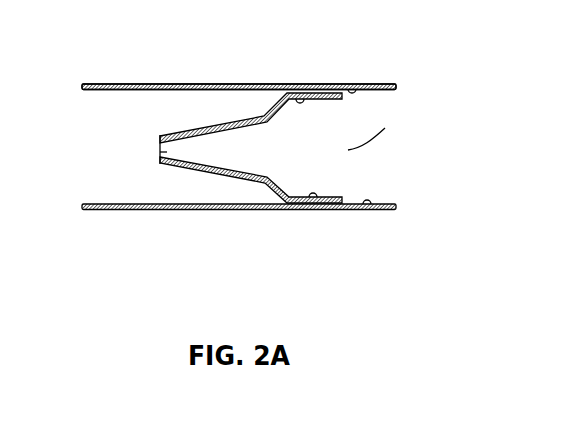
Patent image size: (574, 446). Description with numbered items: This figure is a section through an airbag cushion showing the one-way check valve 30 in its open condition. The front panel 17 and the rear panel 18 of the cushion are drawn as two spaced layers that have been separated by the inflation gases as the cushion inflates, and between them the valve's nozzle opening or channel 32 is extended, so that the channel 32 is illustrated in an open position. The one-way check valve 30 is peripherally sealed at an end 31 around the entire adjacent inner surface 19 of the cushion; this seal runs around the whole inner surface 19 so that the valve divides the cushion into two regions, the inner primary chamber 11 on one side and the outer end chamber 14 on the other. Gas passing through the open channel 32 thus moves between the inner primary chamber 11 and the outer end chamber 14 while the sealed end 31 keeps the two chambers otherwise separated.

The inner primary chamber 11 is at (385, 128).
The outer end chamber 14 is at (153, 108).
The front panel 17 is at (84, 84).
The rear panel 18 is at (157, 212).
The inner surface 19 is at (352, 89).
The one-way check valve 30 is at (245, 116).
The end 31 is at (300, 99).
The nozzle opening or channel 32 is at (160, 149).